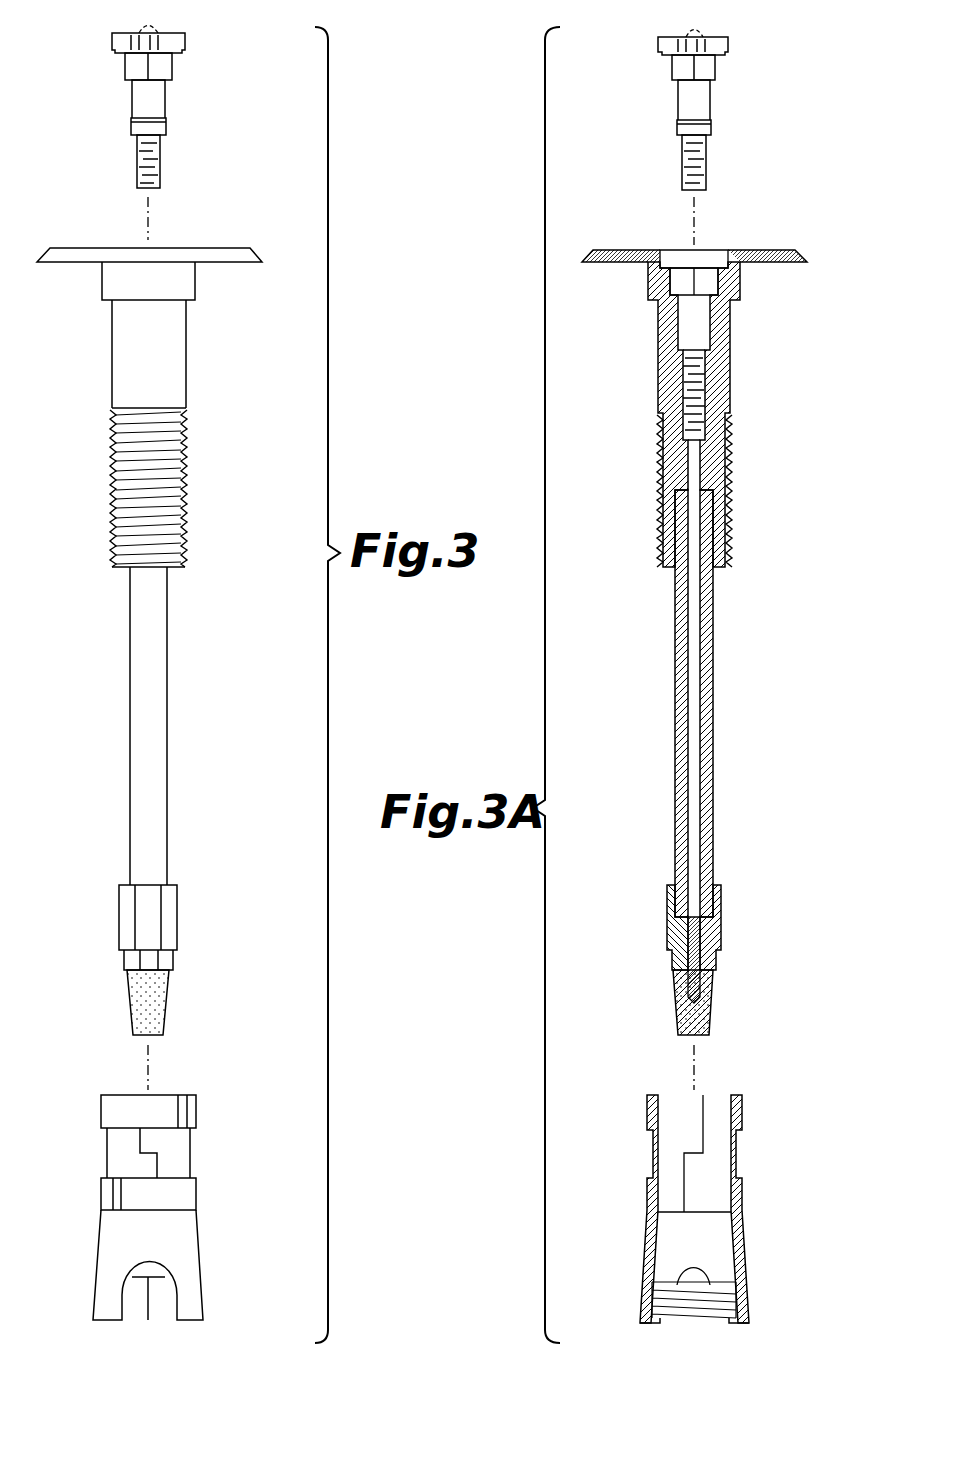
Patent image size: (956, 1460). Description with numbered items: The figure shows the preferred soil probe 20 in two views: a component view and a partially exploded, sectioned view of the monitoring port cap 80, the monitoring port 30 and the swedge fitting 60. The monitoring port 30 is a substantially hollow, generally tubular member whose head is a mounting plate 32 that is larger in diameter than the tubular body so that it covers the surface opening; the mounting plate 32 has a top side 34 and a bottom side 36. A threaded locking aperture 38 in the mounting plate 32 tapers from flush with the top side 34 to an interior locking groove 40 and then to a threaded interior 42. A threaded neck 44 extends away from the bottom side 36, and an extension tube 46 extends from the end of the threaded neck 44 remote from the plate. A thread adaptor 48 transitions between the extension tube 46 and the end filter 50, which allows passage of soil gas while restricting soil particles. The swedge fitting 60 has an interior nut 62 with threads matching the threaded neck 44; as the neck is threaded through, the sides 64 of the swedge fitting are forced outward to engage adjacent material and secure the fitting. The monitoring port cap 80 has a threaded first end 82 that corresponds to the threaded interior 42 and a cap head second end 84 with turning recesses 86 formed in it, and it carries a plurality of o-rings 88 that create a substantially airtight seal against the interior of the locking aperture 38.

In FIG. 3A, the soil probe 20 is at (620, 845).
In FIG. 3, the monitoring port 30 is at (186, 350).
In FIG. 3A, the monitoring port 30 is at (727, 387).
In FIG. 3, the mounting plate 32 is at (175, 254).
In FIG. 3A, the mounting plate 32 is at (703, 250).
In FIG. 3, the top side 34 is at (188, 248).
In FIG. 3A, the top side 34 is at (610, 249).
In FIG. 3, the bottom side 36 is at (225, 263).
In FIG. 3A, the bottom side 36 is at (625, 263).
In FIG. 3A, the threaded locking aperture 38 is at (708, 260).
In FIG. 3A, the interior locking groove 40 is at (718, 278).
In FIG. 3A, the threaded interior 42 is at (697, 375).
In FIG. 3, the threaded neck 44 is at (186, 400).
In FIG. 3A, the threaded neck 44 is at (732, 400).
In FIG. 3, the extension tube 46 is at (167, 725).
In FIG. 3A, the extension tube 46 is at (713, 725).
In FIG. 3, the thread adaptor 48 is at (177, 920).
In FIG. 3A, the thread adaptor 48 is at (722, 920).
In FIG. 3, the end filter 50 is at (165, 1003).
In FIG. 3A, the end filter 50 is at (709, 1003).
In FIG. 3, the swedge fitting 60 is at (196, 1190).
In FIG. 3A, the swedge fitting 60 is at (742, 1190).
In FIG. 3, the interior nut 62 is at (137, 1307).
In FIG. 3A, the interior nut 62 is at (655, 1270).
In FIG. 3, the sides of the swedge fitting 64 is at (202, 1297).
In FIG. 3A, the sides of the swedge fitting 64 is at (650, 1303).
In FIG. 3, the monitoring port cap 80 is at (165, 102).
In FIG. 3A, the monitoring port cap 80 is at (710, 100).
In FIG. 3, the threaded first end 82 is at (160, 165).
In FIG. 3A, the threaded first end 82 is at (706, 165).
In FIG. 3, the cap head second end 84 is at (180, 40).
In FIG. 3A, the cap head second end 84 is at (668, 36).
In FIG. 3, the turning recesses 86 is at (160, 19).
In FIG. 3A, the turning recesses 86 is at (705, 22).
In FIG. 3, the o-rings 88 is at (141, 102).
In FIG. 3A, the o-rings 88 is at (689, 100).